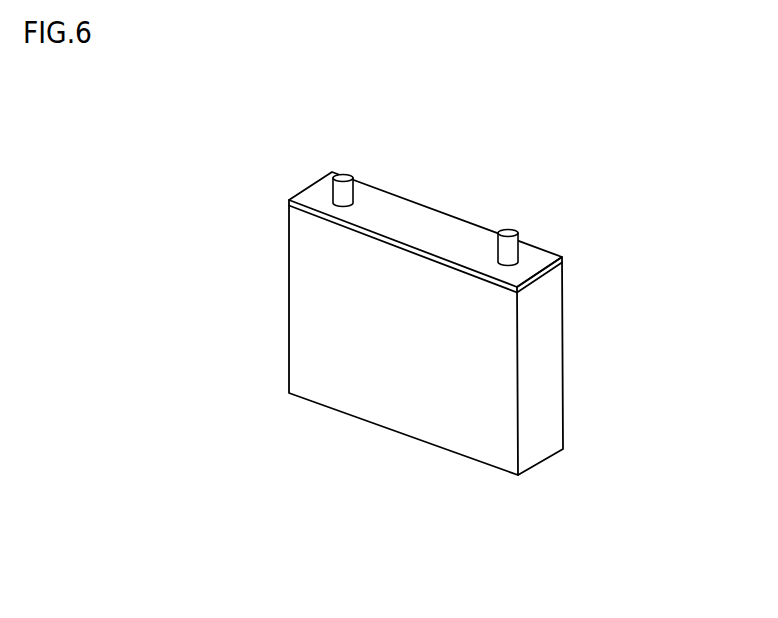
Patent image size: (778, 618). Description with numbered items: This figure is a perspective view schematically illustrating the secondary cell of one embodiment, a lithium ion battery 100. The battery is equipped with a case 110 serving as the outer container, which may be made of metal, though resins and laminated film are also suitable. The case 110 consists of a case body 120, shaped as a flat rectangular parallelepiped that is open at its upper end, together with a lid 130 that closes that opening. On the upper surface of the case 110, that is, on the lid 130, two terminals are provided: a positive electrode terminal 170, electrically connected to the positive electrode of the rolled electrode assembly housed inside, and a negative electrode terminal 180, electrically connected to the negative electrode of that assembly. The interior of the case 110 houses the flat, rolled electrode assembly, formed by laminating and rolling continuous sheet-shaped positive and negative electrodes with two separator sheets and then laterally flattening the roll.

The lithium ion battery 100 is at (473, 274).
The case 110 is at (567, 402).
The case body 120 is at (555, 324).
The lid 130 is at (553, 253).
The positive electrode terminal 170 is at (507, 229).
The negative electrode terminal 180 is at (344, 174).